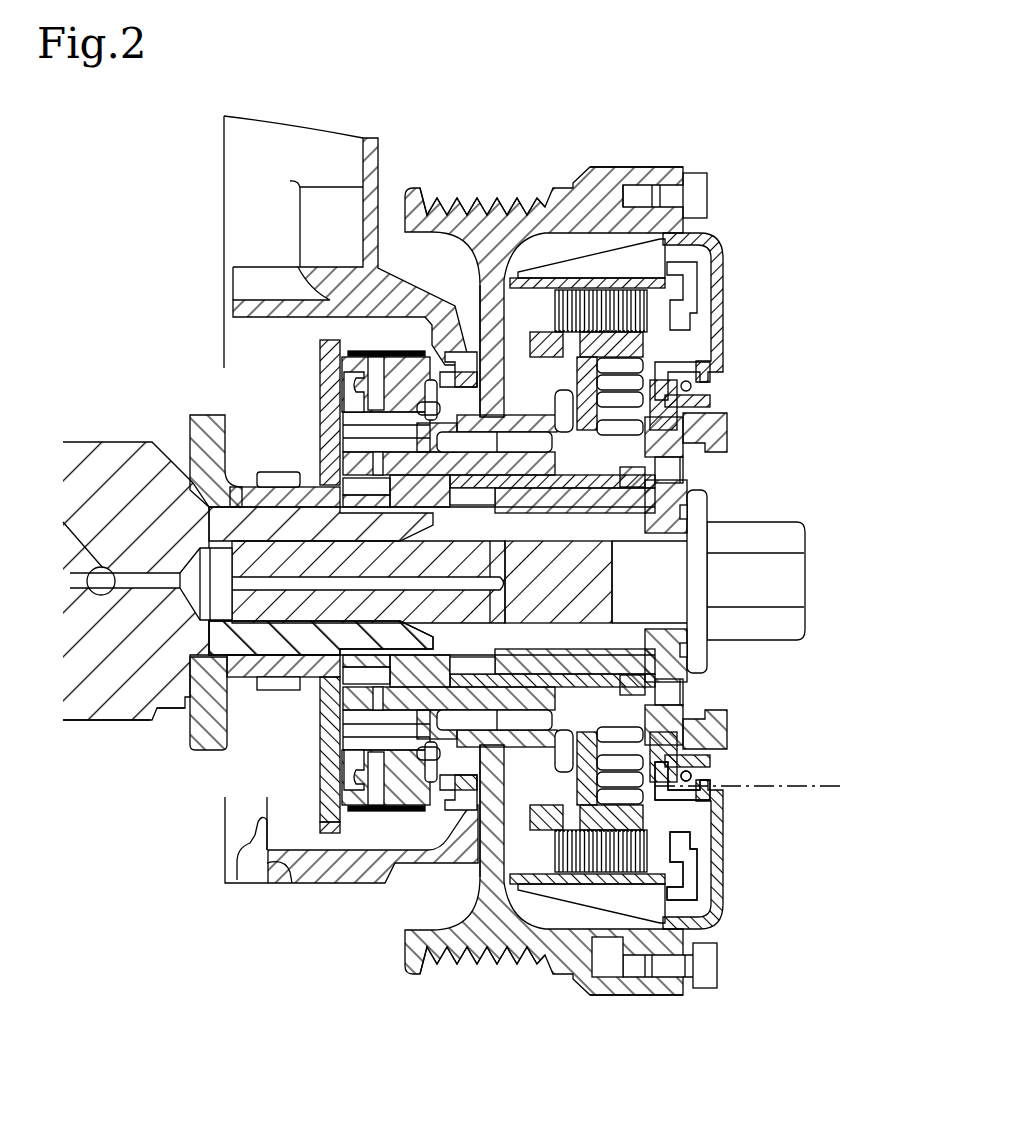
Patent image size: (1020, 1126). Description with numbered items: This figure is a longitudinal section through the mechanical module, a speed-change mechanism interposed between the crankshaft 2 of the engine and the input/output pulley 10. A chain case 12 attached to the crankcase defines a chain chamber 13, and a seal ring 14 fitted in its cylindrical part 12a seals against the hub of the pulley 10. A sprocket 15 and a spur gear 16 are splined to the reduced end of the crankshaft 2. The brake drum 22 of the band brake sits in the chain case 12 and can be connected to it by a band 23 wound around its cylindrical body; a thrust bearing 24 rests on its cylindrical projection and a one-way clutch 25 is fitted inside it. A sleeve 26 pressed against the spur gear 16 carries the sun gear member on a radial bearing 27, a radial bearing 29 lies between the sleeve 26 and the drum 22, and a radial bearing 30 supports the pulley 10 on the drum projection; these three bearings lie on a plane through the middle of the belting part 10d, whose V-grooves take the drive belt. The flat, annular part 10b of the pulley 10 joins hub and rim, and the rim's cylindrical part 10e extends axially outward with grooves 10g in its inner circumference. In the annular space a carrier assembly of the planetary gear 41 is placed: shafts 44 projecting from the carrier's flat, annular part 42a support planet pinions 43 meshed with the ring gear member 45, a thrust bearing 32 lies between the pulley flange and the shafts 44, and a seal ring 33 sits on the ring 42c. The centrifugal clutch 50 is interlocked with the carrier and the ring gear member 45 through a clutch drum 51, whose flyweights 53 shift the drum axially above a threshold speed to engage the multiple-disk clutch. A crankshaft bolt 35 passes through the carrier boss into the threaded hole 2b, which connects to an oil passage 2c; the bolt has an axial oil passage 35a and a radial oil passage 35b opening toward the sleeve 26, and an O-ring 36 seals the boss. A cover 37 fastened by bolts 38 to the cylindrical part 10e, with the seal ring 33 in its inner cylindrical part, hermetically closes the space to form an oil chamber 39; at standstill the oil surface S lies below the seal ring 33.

The crankshaft 2 is at (80, 440).
The threaded hole 2b is at (185, 620).
The oil passage 2c is at (133, 620).
The input/output pulley 10 is at (466, 184).
The flat, annular part 10b is at (480, 300).
The belting part 10d is at (497, 200).
The cylindrical part 10e is at (637, 167).
The grooves 10g is at (613, 977).
The chain case 12 is at (378, 160).
The cylindrical part 12a is at (264, 240).
The chain chamber 13 is at (284, 774).
The seal ring 14 is at (472, 340).
The sprocket 15 is at (245, 486).
The spur gear 16 is at (320, 380).
The brake drum 22 is at (386, 565).
The band 23 is at (348, 335).
The thrust bearing 24 is at (417, 550).
The one-way clutch 25 is at (345, 418).
The sleeve 26 is at (455, 505).
The radial bearing 27 is at (470, 675).
The radial bearing 29 is at (487, 678).
The radial bearing 30 is at (507, 675).
The thrust bearing 32 is at (578, 752).
The seal ring 33 is at (720, 773).
The crankshaft bolt 35 is at (806, 570).
The axial oil passage 35a is at (288, 688).
The radial oil passage 35b is at (622, 562).
The O-ring 36 is at (658, 634).
The cover 37 is at (718, 308).
The bolts 38 is at (708, 195).
The oil chamber 39 is at (703, 820).
The planetary gear 41 is at (663, 352).
The flat, annular part 42a is at (710, 490).
The ring 42c is at (728, 420).
The planet pinions 43 is at (712, 365).
The shafts 44 is at (712, 398).
The ring gear member 45 is at (633, 345).
The centrifugal clutch 50 is at (662, 308).
The clutch drum 51 is at (578, 270).
The flyweights 53 is at (585, 275).
The oil surface S is at (760, 786).